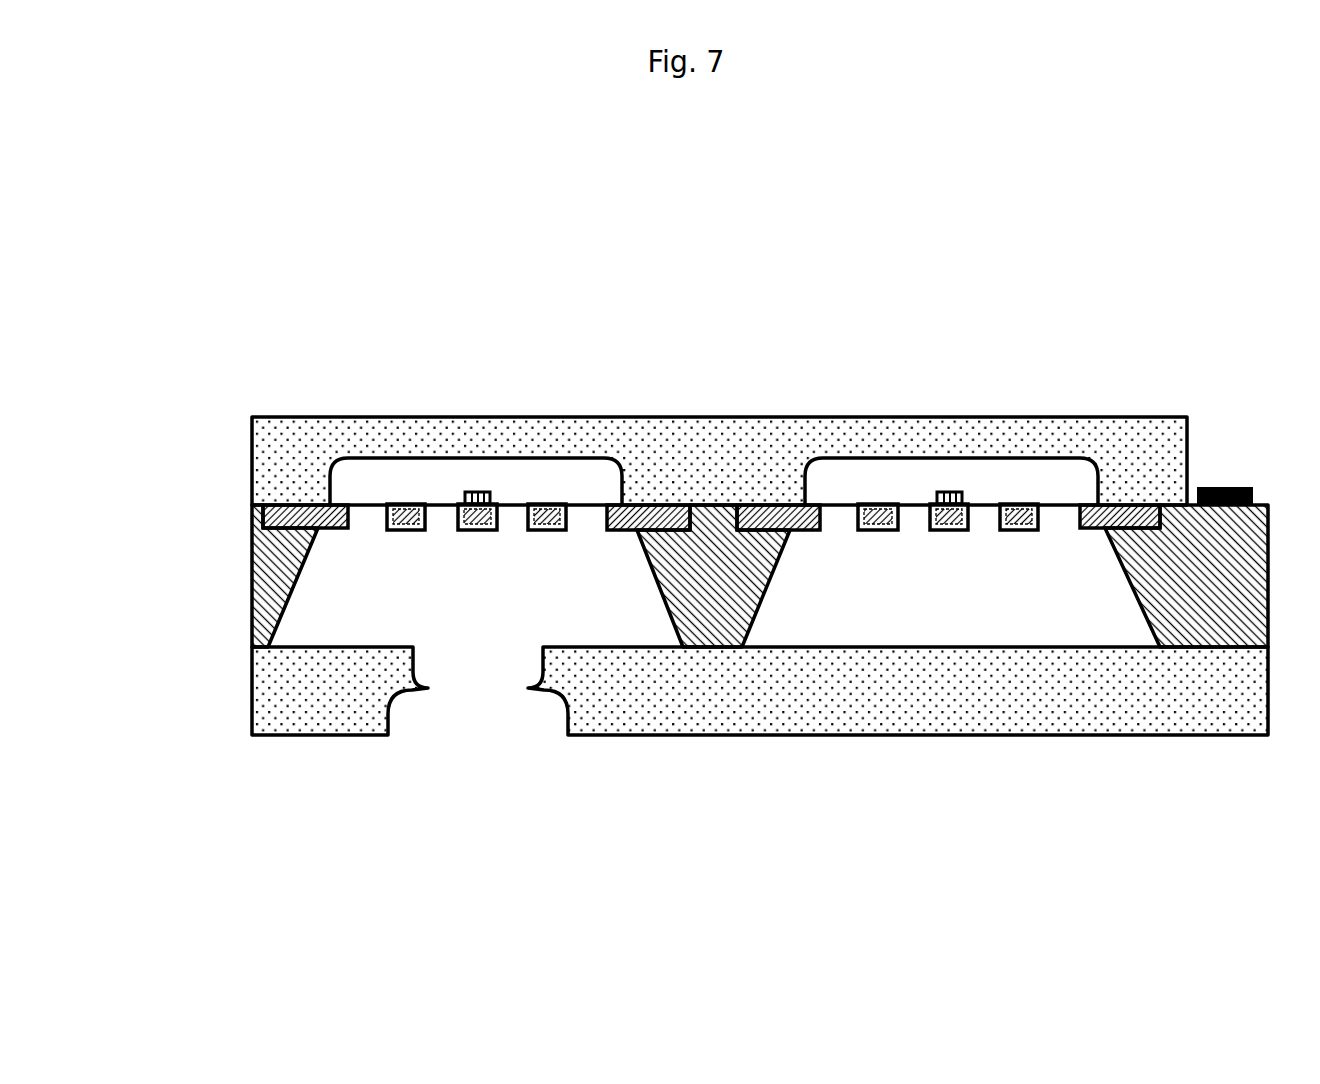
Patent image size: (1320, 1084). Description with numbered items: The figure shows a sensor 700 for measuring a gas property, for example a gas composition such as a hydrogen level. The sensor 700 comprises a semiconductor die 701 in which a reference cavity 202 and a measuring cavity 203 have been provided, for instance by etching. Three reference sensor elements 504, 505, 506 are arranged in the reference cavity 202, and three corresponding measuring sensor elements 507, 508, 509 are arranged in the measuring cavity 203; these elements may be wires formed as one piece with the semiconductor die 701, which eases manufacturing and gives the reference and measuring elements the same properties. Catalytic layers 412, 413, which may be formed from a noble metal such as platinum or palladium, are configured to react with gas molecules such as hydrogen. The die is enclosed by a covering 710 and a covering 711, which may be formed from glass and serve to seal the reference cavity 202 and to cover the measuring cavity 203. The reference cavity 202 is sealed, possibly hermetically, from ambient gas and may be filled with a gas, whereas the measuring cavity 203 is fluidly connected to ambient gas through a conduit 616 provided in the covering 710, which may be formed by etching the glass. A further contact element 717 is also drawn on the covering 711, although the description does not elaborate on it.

The sensor 700 is at (170, 383).
The semiconductor die 701 is at (715, 583).
The reference cavity 202 is at (828, 583).
The measuring cavity 203 is at (577, 583).
The covering 711 is at (1153, 447).
The covering 710 is at (1212, 703).
The contact terminal 717 is at (1225, 487).
The conduit 616 is at (508, 685).
The measuring sensor element 507 is at (405, 533).
The measuring sensor element 508 is at (477, 533).
The measuring sensor element 509 is at (548, 533).
The reference sensor element 504 is at (875, 533).
The reference sensor element 505 is at (948, 533).
The reference sensor element 506 is at (1020, 533).
The catalytic layer 413 is at (460, 500).
The catalytic layer 412 is at (933, 500).